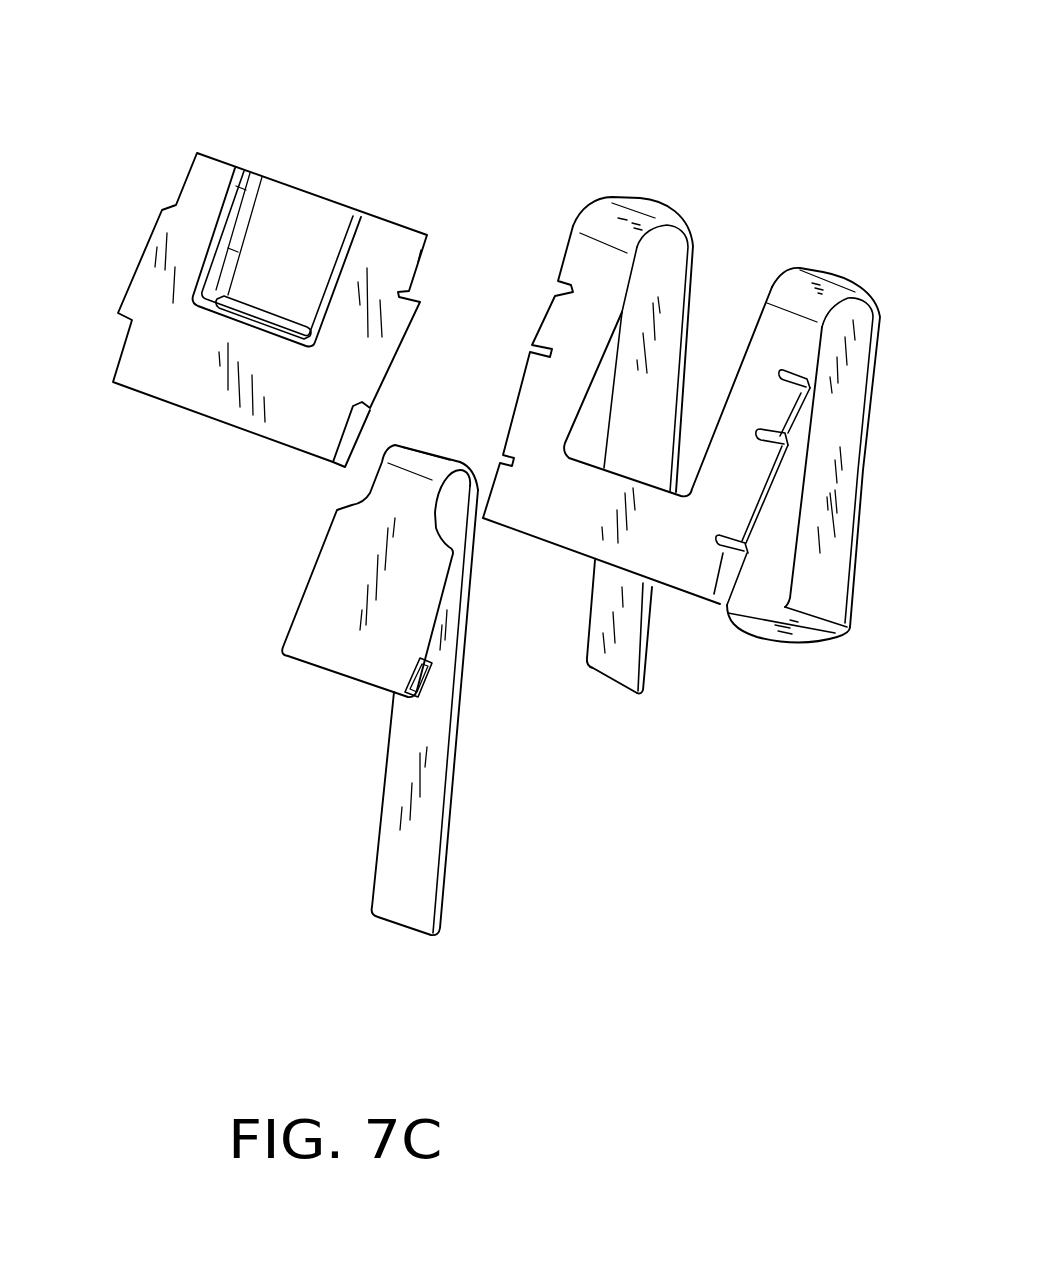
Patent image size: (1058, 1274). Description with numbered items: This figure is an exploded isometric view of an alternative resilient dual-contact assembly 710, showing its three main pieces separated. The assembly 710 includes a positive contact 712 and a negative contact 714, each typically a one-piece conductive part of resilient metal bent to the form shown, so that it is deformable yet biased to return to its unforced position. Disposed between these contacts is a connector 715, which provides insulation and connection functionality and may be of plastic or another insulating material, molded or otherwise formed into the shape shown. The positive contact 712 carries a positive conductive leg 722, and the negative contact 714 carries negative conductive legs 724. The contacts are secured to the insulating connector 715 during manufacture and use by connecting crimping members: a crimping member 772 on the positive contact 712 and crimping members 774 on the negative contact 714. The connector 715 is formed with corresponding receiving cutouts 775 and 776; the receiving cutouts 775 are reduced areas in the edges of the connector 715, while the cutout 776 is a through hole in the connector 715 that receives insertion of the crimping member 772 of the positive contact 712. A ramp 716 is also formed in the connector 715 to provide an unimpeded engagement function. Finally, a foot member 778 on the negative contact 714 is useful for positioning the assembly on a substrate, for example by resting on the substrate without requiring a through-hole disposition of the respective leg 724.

The dual-contact assembly 710 is at (500, 89).
The positive contact 712 is at (333, 610).
The negative contact 714 is at (568, 514).
The connector 715 is at (168, 366).
The ramp 716 is at (195, 303).
The positive conductive leg 722 is at (409, 870).
The negative conductive leg 724 is at (627, 680).
The crimping member 772 is at (424, 684).
The crimping member 774 is at (554, 323).
The receiving cutout 775 is at (428, 236).
The receiving cutout 776 is at (253, 312).
The foot member 778 is at (837, 633).